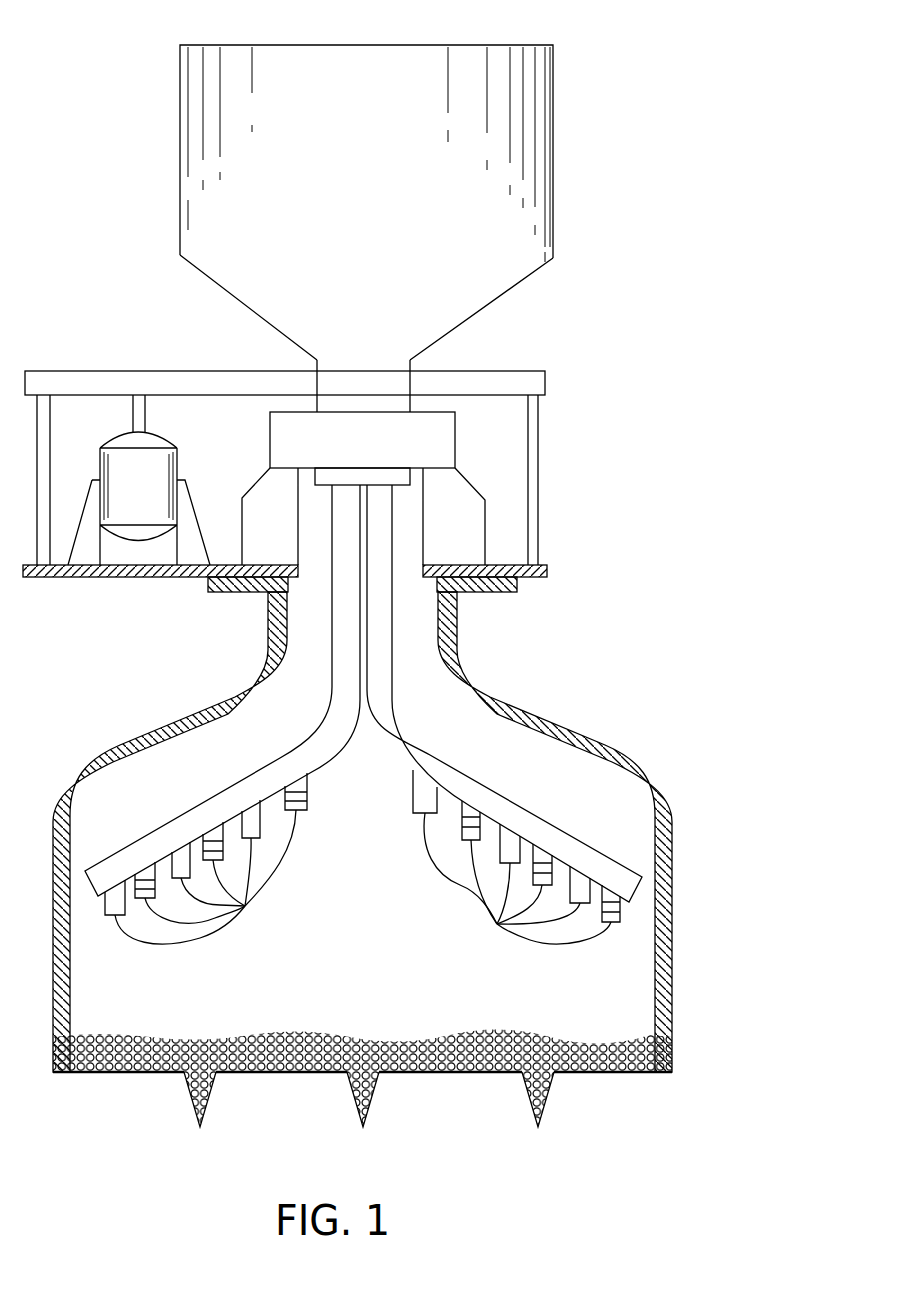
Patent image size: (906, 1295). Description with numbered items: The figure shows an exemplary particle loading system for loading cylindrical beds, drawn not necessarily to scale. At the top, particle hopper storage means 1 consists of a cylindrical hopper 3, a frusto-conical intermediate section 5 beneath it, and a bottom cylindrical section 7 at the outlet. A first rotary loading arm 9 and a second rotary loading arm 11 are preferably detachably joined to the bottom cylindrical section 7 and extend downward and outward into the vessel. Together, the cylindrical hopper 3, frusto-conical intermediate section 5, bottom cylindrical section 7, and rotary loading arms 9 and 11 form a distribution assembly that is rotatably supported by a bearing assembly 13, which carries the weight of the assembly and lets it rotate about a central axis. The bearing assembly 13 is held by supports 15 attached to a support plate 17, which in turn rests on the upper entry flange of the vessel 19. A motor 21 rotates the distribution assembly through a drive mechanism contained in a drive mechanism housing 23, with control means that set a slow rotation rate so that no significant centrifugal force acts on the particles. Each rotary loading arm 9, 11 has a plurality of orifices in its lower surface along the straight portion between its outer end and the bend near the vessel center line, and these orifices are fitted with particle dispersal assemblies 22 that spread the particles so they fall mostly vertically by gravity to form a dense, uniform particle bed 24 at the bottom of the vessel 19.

The particle hopper storage means 1 is at (126, 75).
The cylindrical hopper 3 is at (180, 152).
The frusto-conical intermediate section 5 is at (221, 285).
The bottom cylindrical section 7 is at (317, 403).
The drive mechanism housing 23 is at (105, 378).
The bearing assembly 13 is at (458, 422).
The supports 15 is at (267, 493).
The motor 21 is at (152, 497).
The support plate 17 is at (547, 572).
The vessel 19 is at (553, 713).
The first rotary loading arm 9 is at (227, 790).
The second rotary loading arm 11 is at (517, 797).
The particle dispersal assemblies 22 is at (245, 908).
The particle bed 24 is at (269, 1033).